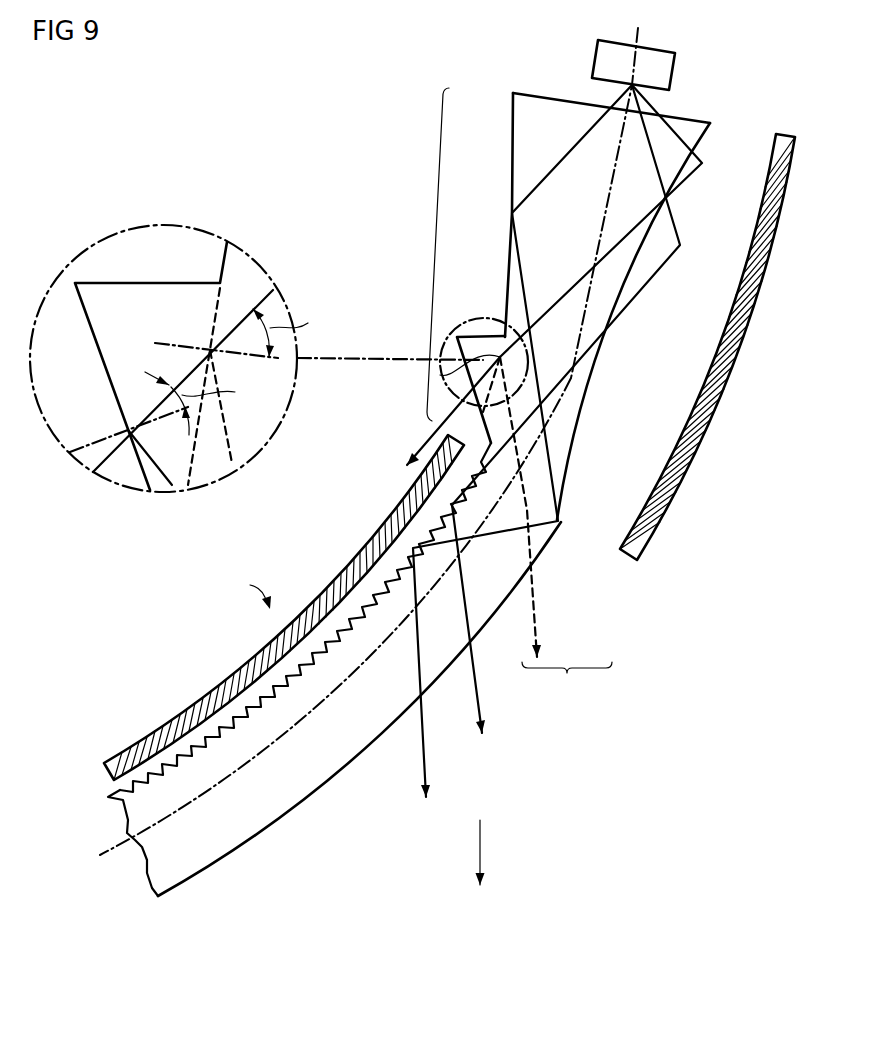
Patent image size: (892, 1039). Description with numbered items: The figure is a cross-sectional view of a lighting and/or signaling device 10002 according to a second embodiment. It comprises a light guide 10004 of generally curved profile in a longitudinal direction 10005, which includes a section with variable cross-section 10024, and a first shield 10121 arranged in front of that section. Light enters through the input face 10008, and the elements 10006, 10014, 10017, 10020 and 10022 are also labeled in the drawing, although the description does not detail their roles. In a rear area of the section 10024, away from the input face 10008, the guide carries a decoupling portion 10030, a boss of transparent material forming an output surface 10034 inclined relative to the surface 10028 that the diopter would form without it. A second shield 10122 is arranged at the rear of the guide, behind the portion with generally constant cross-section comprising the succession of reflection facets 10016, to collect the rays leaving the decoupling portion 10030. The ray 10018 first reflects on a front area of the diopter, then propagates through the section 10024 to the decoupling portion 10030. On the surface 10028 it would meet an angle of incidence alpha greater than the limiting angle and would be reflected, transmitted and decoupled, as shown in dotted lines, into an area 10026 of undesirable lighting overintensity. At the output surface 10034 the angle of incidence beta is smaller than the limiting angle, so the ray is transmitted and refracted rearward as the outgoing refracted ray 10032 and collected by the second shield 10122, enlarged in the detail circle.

The lighting and/or signaling device 10002 is at (340, 244).
The light guide 10004 is at (230, 582).
The longitudinal direction 10005 is at (642, 32).
The light source 10006 is at (600, 55).
The input face 10008 is at (545, 95).
The viewing direction arrow 10014 is at (482, 830).
The reflection facets 10016 is at (118, 791).
The outer surface of substrate 10017 is at (313, 792).
The ray 10018 is at (666, 108).
The light ray 10020 is at (560, 164).
The light ray 10022 is at (651, 142).
The section with variable cross-section 10024 is at (436, 258).
The area of undesirable lighting overintensity 10026 is at (567, 688).
The surface 10028 is at (442, 357).
The decoupling portion 10030 is at (483, 318).
The outgoing refracted ray 10032 is at (420, 440).
The output surface 10034 is at (440, 375).
The first shield 10121 is at (687, 461).
The second shield 10122 is at (197, 713).